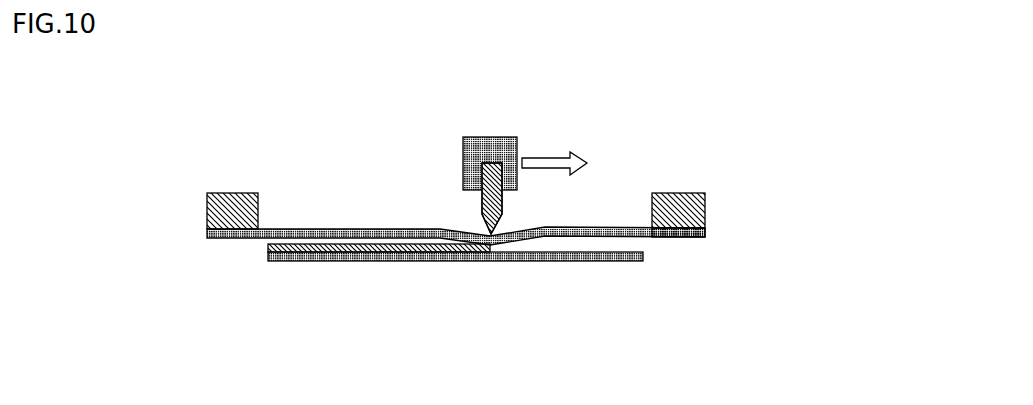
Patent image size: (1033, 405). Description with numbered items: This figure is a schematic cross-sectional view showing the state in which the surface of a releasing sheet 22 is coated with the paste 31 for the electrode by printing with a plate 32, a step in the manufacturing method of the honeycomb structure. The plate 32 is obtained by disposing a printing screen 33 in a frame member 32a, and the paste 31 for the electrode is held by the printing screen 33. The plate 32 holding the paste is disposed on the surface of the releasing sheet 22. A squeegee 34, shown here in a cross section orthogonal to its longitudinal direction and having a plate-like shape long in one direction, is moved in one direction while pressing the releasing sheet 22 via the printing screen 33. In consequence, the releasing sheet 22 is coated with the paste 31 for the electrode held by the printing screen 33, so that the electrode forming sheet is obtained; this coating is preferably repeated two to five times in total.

The printing screen 33 is at (312, 228).
The squeegee 34 is at (482, 197).
The plate 32 is at (716, 194).
The frame member 32a is at (705, 213).
The paste for the electrode 31 is at (268, 245).
The releasing sheet 22 is at (560, 262).